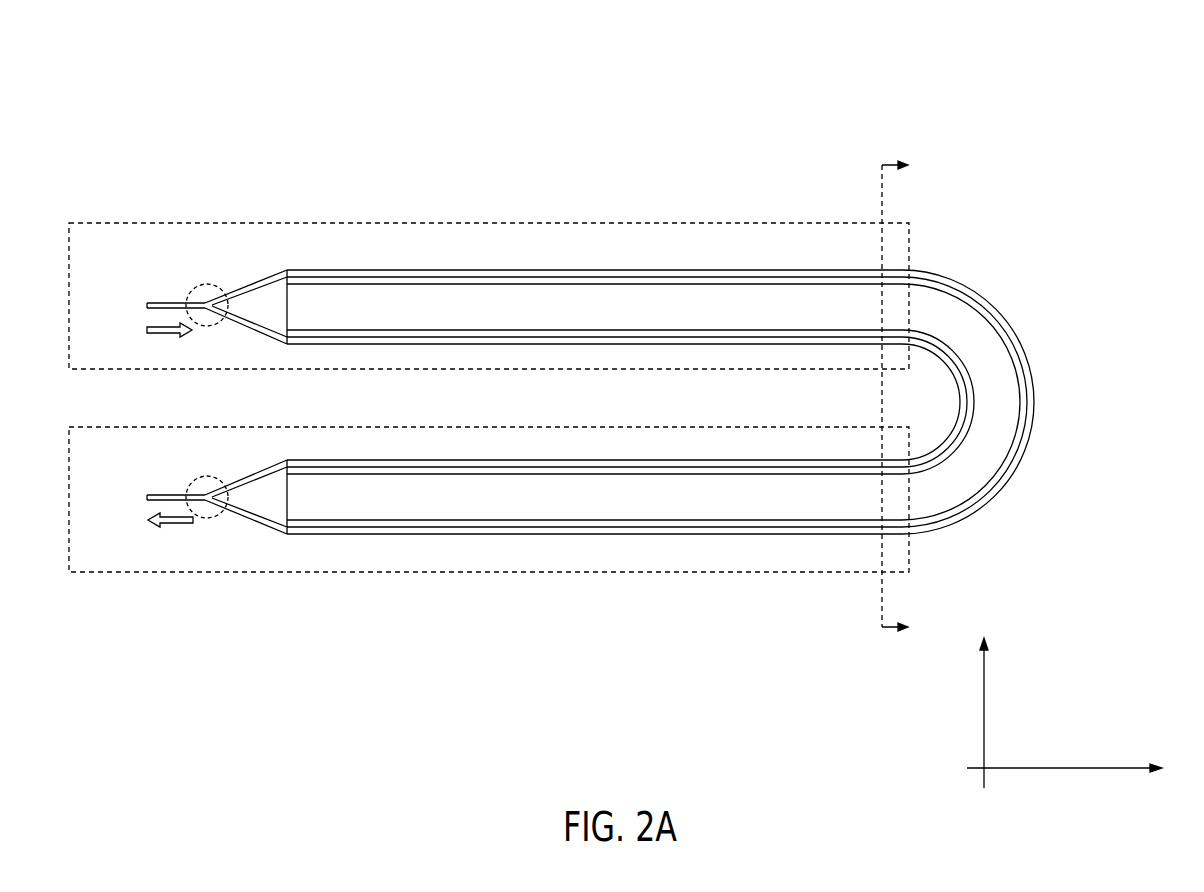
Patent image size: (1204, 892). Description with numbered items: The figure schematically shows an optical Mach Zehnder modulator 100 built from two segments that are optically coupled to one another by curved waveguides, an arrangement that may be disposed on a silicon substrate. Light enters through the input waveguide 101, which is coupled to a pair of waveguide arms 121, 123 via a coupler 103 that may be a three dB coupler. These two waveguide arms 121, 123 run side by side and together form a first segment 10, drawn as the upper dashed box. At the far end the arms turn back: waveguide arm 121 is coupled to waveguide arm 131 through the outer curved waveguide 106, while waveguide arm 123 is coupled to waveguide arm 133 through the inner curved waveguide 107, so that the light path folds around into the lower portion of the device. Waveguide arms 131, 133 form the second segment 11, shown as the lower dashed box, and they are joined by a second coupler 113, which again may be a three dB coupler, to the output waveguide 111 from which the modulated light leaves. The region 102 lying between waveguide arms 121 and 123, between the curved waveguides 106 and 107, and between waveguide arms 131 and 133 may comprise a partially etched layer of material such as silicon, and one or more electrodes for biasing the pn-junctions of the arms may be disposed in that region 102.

The optical Mach Zehnder modulator 100 is at (980, 93).
The segment 10 is at (632, 222).
The segment 11 is at (553, 578).
The input waveguide 101 is at (170, 303).
The coupler 103 is at (205, 283).
The output waveguide 111 is at (170, 495).
The coupler 113 is at (205, 475).
The region 102 is at (700, 391).
The waveguide arm 121 is at (555, 275).
The waveguide arm 123 is at (577, 338).
The waveguide arm 133 is at (683, 463).
The waveguide arm 131 is at (705, 534).
The curved waveguide 106 is at (1002, 322).
The curved waveguide 107 is at (965, 415).